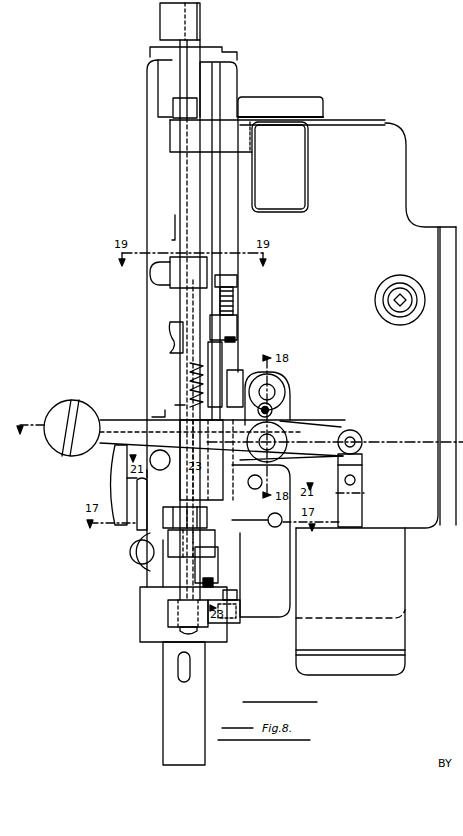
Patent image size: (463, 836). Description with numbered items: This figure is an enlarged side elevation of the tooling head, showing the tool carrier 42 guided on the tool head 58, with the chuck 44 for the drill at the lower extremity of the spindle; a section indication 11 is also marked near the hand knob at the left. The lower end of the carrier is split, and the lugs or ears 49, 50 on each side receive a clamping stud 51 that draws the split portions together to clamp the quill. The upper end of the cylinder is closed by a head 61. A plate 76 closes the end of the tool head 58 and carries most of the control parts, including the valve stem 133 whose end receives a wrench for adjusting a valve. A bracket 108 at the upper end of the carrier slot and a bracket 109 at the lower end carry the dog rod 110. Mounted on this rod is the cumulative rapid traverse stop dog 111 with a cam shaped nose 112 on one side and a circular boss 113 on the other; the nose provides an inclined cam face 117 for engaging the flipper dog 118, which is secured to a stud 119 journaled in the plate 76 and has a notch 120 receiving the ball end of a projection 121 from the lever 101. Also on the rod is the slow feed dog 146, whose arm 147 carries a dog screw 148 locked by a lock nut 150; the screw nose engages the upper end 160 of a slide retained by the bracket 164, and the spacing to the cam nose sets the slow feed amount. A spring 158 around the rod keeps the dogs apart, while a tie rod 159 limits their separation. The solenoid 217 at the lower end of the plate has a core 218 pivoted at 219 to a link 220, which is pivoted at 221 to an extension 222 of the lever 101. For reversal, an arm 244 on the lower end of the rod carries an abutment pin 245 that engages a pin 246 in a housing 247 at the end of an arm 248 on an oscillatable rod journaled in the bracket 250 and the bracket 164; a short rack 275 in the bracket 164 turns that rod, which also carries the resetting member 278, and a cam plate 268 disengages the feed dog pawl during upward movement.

The bracket or arm 108 is at (162, 33).
The dog rod or bar 110 is at (193, 79).
The cylinder head 61 is at (311, 101).
The bracket 250 is at (288, 142).
The tool carrier 42 is at (158, 152).
The tool head plate 76 is at (382, 133).
The tool head 58 is at (446, 237).
The valve stem 133 is at (402, 298).
The pivotal connection 219 is at (182, 180).
The cam plate 268 is at (175, 235).
The resetting member 278 is at (172, 285).
The dog screw 148 is at (233, 292).
The lock nut 150 is at (233, 303).
The arm 147 is at (232, 325).
The tie rod or bolt 159 is at (217, 353).
The upper end of slide 160 is at (233, 370).
The slow feed dog 146 is at (175, 323).
The spring 158 is at (192, 373).
The cumulative rapid traverse stop dog 111 is at (175, 405).
The circular boss 113 is at (157, 416).
The cam shaped nose 112 is at (253, 372).
The flipper dog 118 is at (277, 393).
The stud 119 is at (273, 390).
The notch 120 is at (272, 405).
The projection 121 is at (272, 412).
The inclined cam face 117 is at (287, 432).
The extension of the lever 222 is at (348, 424).
The pivotal connection 221 is at (360, 437).
The link 220 is at (357, 457).
The core 218 is at (357, 515).
The solenoid 217 is at (395, 548).
The bracket 164 is at (272, 505).
The lever 101 is at (128, 420).
The knob 11 is at (56, 428).
The lug or ear 49 is at (115, 483).
The short rack 275 is at (157, 485).
The lug or ear 50 is at (128, 545).
The clamping stud 51 is at (135, 555).
The bracket or arm 109 is at (165, 565).
The arm 248 is at (177, 577).
The cylindrical portion or housing 247 is at (212, 563).
The pin 246 is at (212, 582).
The abutment pin 245 is at (232, 597).
The arm 244 is at (237, 623).
The chuck 44 is at (175, 692).